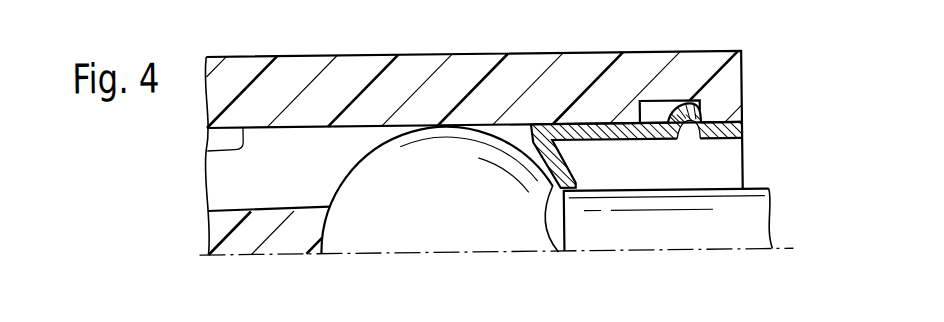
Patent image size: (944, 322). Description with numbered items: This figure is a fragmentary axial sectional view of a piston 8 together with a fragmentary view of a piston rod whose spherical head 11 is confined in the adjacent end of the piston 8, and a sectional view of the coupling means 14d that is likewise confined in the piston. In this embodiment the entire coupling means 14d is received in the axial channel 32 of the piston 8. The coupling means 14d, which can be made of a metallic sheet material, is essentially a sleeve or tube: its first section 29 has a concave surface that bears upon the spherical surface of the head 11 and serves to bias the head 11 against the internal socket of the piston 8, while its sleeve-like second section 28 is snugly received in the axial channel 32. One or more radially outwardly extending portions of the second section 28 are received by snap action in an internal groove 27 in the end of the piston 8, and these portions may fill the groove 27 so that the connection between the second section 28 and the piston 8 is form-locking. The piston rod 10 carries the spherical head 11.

The piston 8 is at (331, 78).
The internal groove 27 is at (658, 117).
The second section 28 is at (688, 116).
The axial channel 32 is at (210, 150).
The coupling means 14d is at (590, 169).
The head 11 is at (433, 243).
The first section 29 is at (558, 258).
The shaft 10 is at (703, 246).